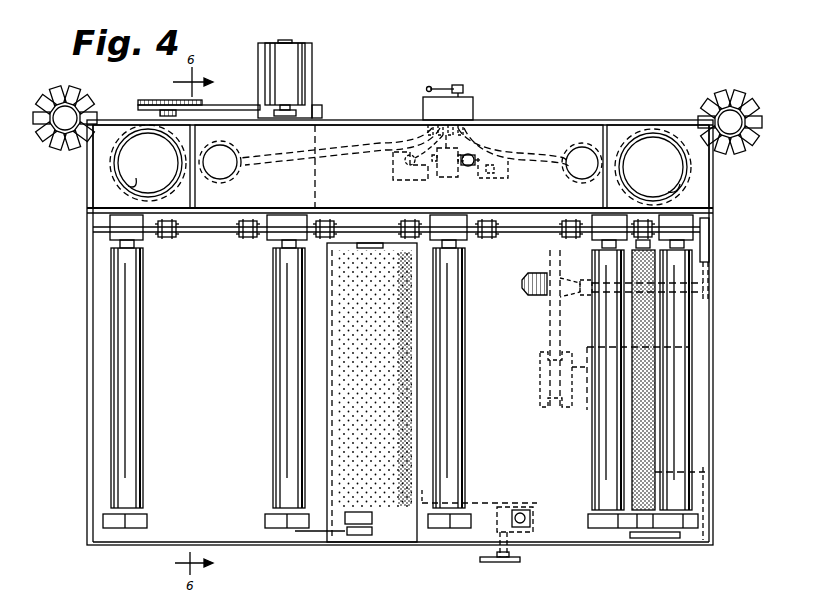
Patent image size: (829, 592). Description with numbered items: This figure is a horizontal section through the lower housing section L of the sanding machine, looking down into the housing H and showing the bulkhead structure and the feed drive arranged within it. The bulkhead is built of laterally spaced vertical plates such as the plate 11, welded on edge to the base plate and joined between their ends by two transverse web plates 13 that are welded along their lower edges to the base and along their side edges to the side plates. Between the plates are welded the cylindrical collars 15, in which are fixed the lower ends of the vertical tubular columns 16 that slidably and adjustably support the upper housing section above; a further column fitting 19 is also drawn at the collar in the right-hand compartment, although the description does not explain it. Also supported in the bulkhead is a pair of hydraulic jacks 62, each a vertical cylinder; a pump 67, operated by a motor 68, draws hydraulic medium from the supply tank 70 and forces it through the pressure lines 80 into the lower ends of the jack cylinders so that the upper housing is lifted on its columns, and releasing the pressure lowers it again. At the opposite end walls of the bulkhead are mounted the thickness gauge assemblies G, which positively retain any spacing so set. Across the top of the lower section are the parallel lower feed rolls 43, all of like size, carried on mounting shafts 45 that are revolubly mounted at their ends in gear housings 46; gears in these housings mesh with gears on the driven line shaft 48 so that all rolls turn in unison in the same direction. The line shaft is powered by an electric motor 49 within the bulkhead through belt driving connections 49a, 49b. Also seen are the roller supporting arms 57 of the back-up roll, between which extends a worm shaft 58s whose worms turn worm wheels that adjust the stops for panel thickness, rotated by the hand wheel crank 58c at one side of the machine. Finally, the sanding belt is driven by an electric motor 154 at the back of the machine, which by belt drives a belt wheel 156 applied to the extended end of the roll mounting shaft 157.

The electric motor 154 is at (288, 57).
The roll mounting shaft 157 is at (168, 110).
The belt wheel 156 is at (234, 100).
The thickness gauge assembly G is at (55, 88).
The lower housing section L is at (388, 114).
The vertical plate 11 is at (563, 118).
The cylindrical collar 15 is at (110, 175).
The tubular column 16 is at (128, 184).
The drum bearing 19 is at (672, 186).
The hydraulic jack 62 is at (230, 172).
The pressure line 80 is at (328, 152).
The supply tank 70 is at (393, 172).
The pump 67 is at (452, 178).
The motor 68 is at (490, 170).
The transverse web plate 13 is at (203, 200).
The gear housing 46 is at (122, 228).
The mounting shaft 45 is at (125, 248).
The line shaft 48 is at (508, 232).
The lower feed roll 43 is at (120, 298).
The electric motor 49 is at (580, 416).
The belt driving connection 49a is at (552, 325).
The belt driving connection 49b is at (712, 258).
The housing H is at (712, 420).
The arm 57 is at (484, 500).
The worm shaft 58s is at (503, 503).
The hand wheel crank 58c is at (513, 564).